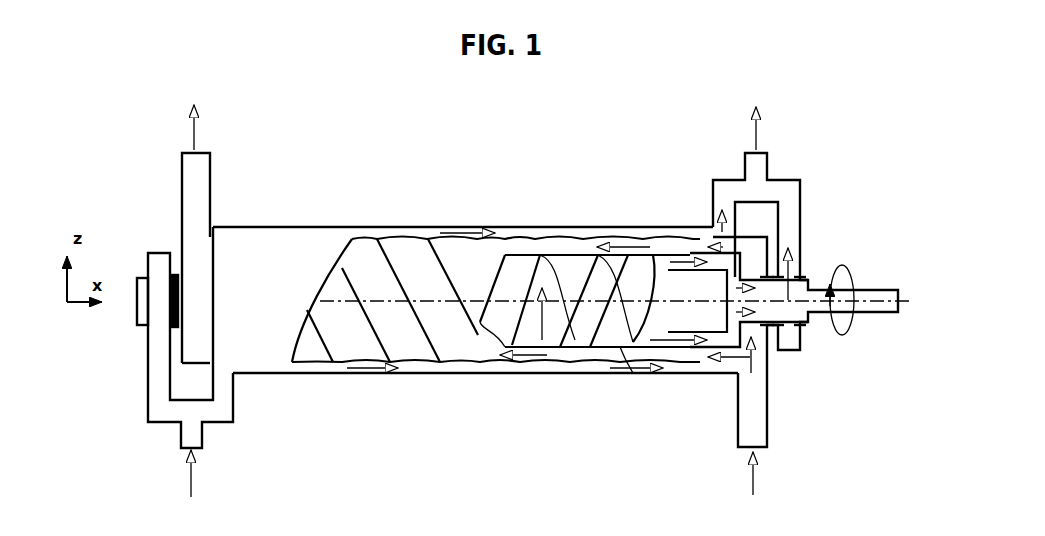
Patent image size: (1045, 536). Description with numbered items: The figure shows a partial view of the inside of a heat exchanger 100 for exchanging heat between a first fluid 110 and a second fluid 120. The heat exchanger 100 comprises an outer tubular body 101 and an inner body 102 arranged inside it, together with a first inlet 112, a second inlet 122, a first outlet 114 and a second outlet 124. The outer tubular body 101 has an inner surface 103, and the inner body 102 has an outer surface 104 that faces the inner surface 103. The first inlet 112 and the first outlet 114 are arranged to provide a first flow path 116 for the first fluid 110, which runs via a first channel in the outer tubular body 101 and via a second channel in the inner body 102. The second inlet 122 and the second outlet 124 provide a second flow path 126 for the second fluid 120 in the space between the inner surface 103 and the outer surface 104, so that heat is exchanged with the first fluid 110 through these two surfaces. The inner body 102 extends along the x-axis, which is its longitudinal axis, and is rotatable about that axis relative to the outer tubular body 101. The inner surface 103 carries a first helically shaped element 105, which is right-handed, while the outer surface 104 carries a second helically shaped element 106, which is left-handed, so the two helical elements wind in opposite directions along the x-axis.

The heat exchanger 100 is at (356, 162).
The outer tubular body 101 is at (265, 243).
The inner body 102 is at (652, 237).
The inner surface 103 is at (563, 238).
The outer surface 104 is at (590, 238).
The first helically shaped element 105 is at (420, 340).
The second helically shaped element 106 is at (602, 347).
The first fluid 110 is at (625, 350).
The first inlet 112 is at (205, 437).
The first outlet 114 is at (758, 163).
The first flow path 116 is at (447, 237).
The second fluid 120 is at (748, 373).
The second inlet 122 is at (758, 433).
The second outlet 124 is at (190, 167).
The second flow path 126 is at (530, 355).